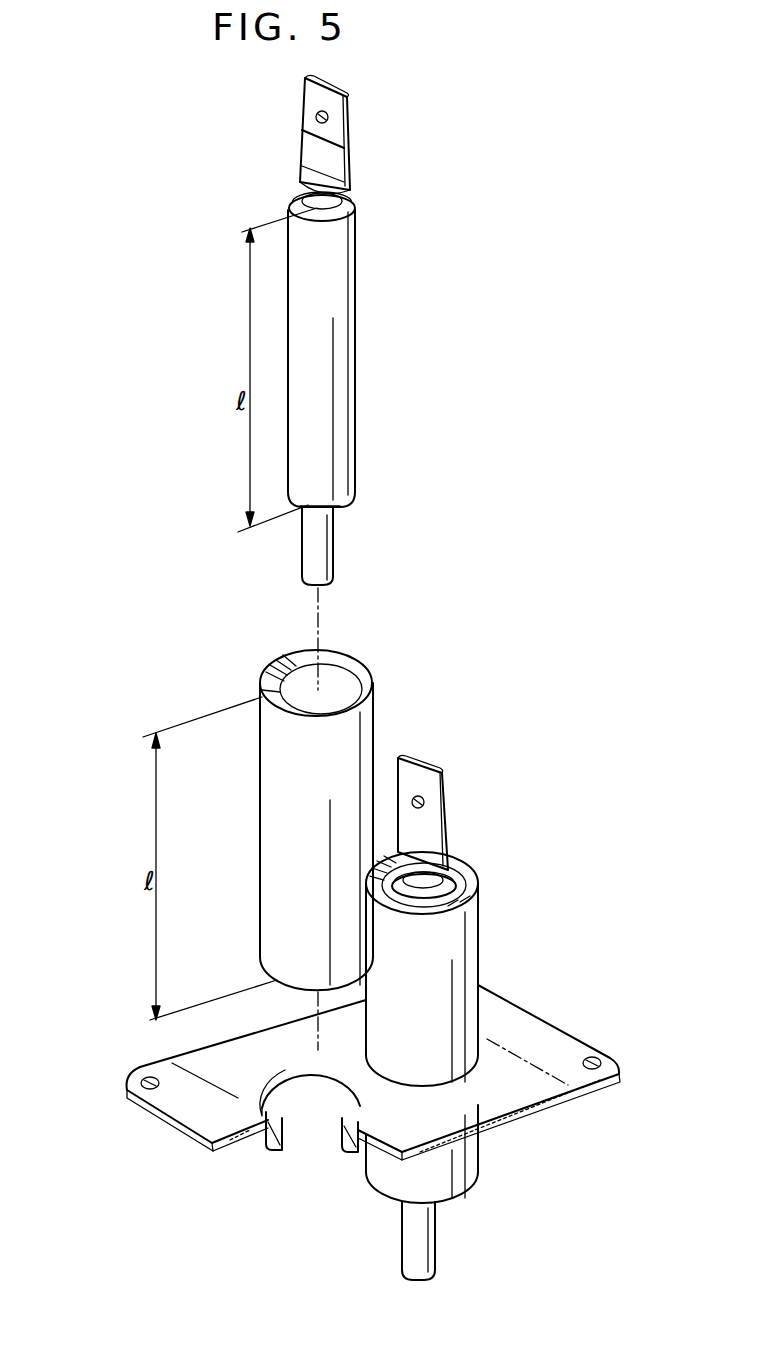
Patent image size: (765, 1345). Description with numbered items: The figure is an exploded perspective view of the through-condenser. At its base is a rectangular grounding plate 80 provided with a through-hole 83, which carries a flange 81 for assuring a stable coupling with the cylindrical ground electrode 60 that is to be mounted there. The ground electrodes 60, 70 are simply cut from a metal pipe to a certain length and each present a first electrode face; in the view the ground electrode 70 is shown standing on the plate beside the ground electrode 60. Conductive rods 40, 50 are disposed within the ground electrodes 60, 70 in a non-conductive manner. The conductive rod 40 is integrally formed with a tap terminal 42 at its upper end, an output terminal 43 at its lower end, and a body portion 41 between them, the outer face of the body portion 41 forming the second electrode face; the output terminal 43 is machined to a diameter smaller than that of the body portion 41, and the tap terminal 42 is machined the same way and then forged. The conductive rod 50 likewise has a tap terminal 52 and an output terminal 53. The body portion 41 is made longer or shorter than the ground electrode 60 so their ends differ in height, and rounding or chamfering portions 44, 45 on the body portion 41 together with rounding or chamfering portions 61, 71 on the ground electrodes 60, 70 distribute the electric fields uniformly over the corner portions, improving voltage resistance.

The conductive rod 40 is at (350, 410).
The body portion 41 is at (355, 323).
The tap terminal 42 is at (350, 134).
The output terminal 43 is at (334, 562).
The rounding or chamfering portion 44 is at (356, 238).
The rounding or chamfering portion 45 is at (338, 506).
The conductive rod 50 is at (436, 872).
The tap terminal 52 is at (448, 800).
The output terminal 53 is at (412, 1245).
The ground electrode 60 is at (368, 744).
The rounding or chamfering portion 61 is at (280, 688).
The ground electrode 70 is at (466, 974).
The rounding or chamfering portion 71 is at (480, 882).
The grounding plate 80 is at (162, 1121).
The flange 81 is at (268, 1140).
The through-hole 83 is at (186, 1052).